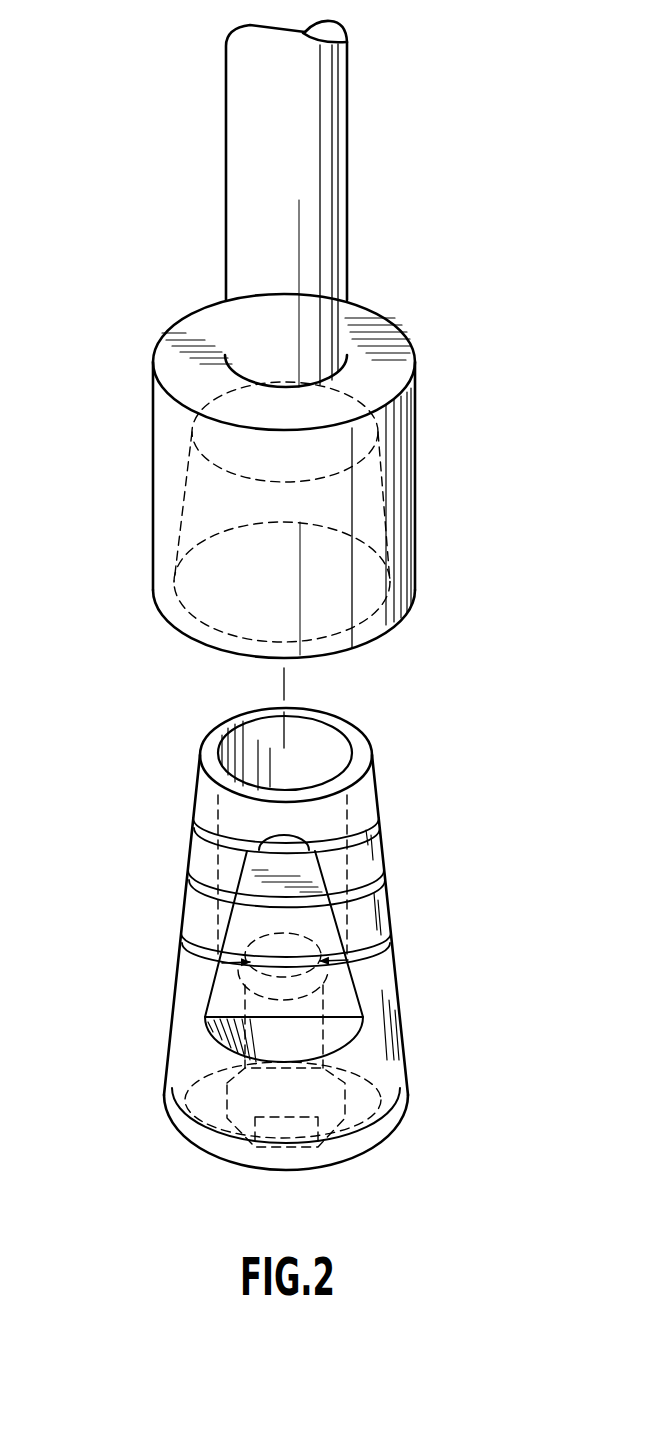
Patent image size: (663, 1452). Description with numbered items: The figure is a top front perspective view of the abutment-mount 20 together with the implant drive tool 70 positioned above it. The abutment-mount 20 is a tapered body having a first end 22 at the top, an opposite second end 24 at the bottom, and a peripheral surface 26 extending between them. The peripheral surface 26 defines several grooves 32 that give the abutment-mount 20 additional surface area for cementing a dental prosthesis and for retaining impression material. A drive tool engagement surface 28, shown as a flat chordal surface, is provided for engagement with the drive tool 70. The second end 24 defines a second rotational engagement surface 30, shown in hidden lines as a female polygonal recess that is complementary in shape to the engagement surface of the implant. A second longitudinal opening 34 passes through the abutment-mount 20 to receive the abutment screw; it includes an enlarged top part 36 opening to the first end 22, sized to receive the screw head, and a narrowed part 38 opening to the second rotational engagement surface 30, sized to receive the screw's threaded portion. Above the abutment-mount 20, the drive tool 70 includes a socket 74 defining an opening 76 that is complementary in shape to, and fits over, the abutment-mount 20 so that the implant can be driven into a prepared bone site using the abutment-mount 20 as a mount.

The abutment-mount 20 is at (315, 940).
The first end 22 is at (359, 746).
The second end 24 is at (390, 1123).
The peripheral surface 26 is at (180, 1013).
The drive tool engagement surface 28 is at (348, 986).
The second rotational engagement surface 30 is at (318, 1142).
The grooves 32 is at (373, 940).
The second longitudinal opening 34 is at (312, 758).
The enlarged top part 36 is at (217, 852).
The narrowed part 38 is at (323, 1037).
The implant drive tool 70 is at (378, 337).
The socket 74 is at (415, 493).
The opening 76 is at (392, 624).